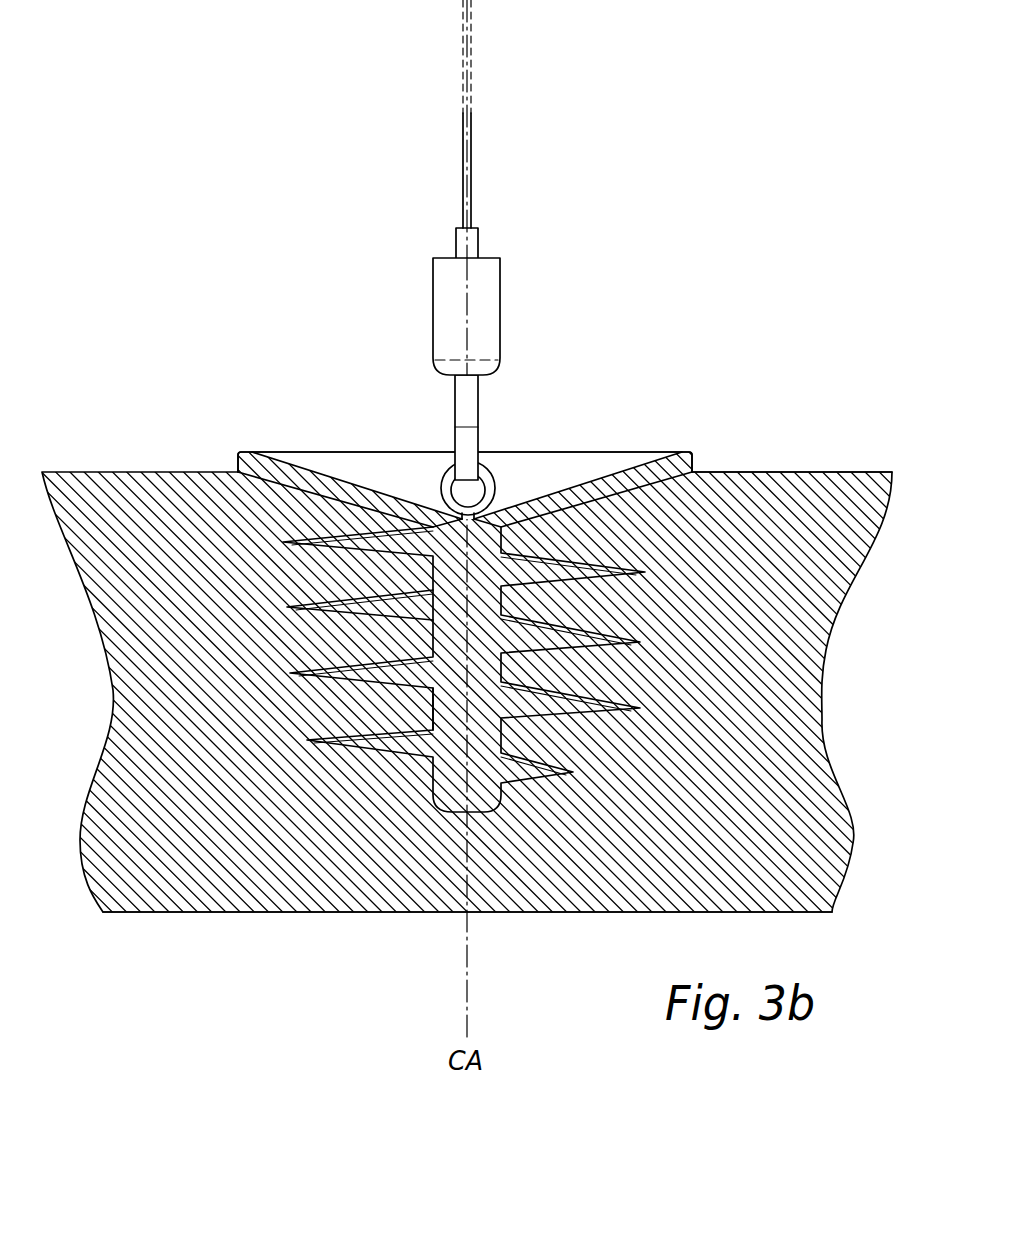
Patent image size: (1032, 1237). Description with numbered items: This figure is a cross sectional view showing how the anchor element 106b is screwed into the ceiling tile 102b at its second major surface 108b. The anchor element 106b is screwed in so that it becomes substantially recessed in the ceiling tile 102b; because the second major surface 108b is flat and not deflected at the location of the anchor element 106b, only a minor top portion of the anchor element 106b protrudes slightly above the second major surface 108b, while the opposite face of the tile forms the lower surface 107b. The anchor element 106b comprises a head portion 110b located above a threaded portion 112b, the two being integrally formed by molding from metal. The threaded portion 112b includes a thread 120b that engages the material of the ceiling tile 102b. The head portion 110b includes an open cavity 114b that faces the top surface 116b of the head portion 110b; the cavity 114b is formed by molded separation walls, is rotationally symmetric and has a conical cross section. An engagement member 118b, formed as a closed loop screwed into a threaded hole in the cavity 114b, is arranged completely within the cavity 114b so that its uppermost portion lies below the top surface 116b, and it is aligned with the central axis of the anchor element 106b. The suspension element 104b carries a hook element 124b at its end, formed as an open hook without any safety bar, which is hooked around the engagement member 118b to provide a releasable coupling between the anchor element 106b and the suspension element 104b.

The ceiling tile 102b is at (222, 913).
The suspension element 104b is at (471, 182).
The anchor element 106b is at (602, 567).
The lower tissue surface 107b is at (610, 913).
The second major surface 108b is at (840, 471).
The head portion 110b is at (511, 415).
The threaded portion 112b is at (284, 708).
The cavity 114b is at (375, 469).
The top surface 116b is at (684, 451).
The engagement member 118b is at (492, 479).
The thread 120b is at (643, 640).
The hook element 124b is at (498, 302).